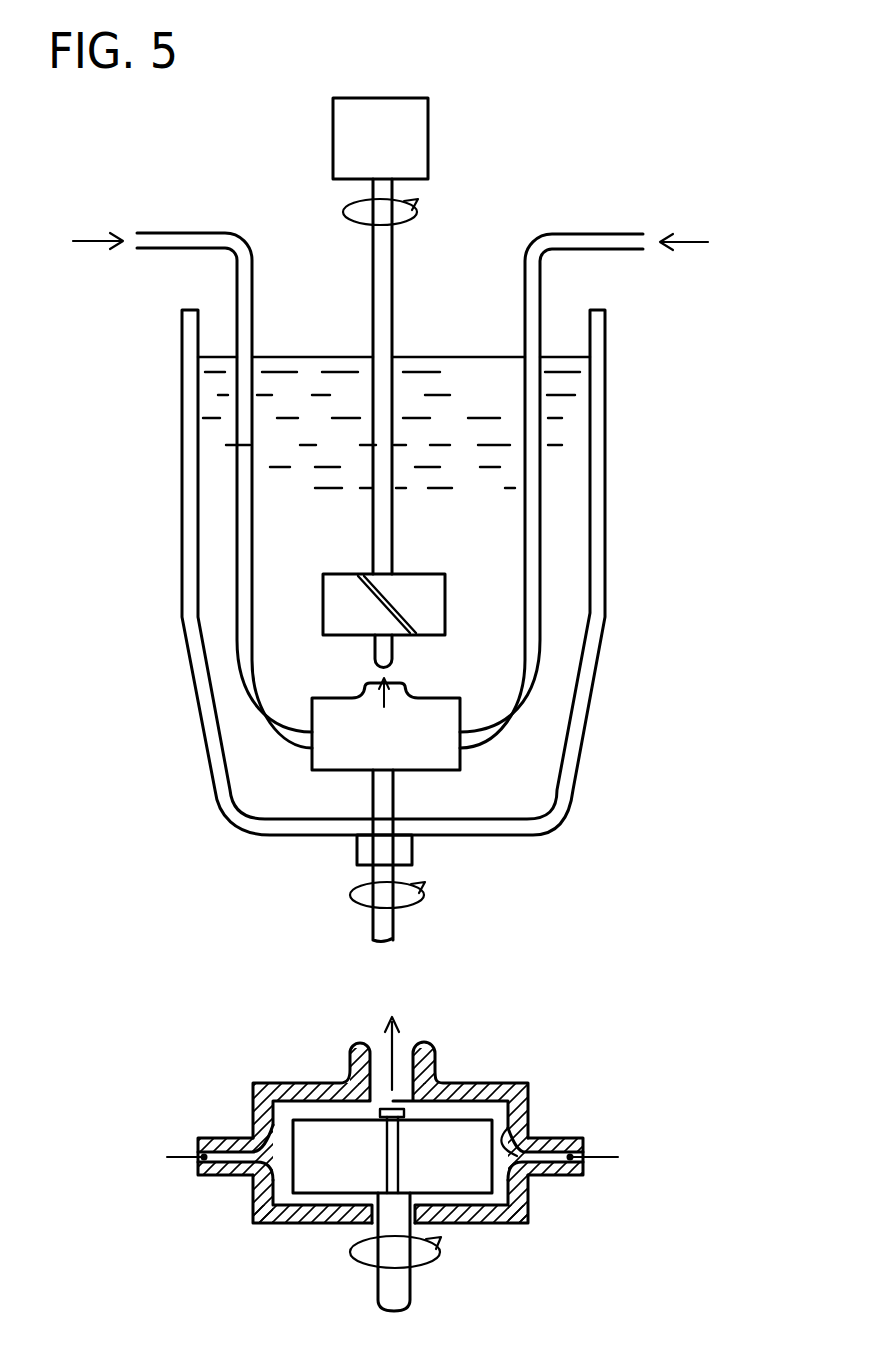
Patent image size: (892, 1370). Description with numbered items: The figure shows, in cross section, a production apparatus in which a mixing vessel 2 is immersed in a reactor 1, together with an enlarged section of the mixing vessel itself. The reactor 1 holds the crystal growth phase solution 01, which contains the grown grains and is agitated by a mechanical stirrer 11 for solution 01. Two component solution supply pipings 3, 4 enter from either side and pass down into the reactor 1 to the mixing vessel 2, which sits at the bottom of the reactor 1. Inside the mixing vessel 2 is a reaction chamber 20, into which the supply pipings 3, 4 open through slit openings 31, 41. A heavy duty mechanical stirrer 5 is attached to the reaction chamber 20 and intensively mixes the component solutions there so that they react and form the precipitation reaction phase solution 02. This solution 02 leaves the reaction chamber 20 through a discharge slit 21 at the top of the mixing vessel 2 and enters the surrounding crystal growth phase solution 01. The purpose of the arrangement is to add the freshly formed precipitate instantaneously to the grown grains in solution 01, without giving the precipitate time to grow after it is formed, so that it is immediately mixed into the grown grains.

The reactor 1 is at (605, 430).
The crystal growth phase solution 01 is at (573, 550).
The mechanical stirrer for solution 01 11 is at (392, 527).
The mixing vessel 2 is at (437, 697).
The precipitation reaction phase solution 02 is at (391, 884).
The component solution supply piping 3 is at (200, 233).
The component solution supply piping 4 is at (580, 234).
The slit opening for supply piping 3 31 is at (265, 1158).
The slit opening for supply piping 4 41 is at (515, 1122).
The reaction chamber 20 is at (487, 1103).
The discharge slit 21 is at (453, 1082).
The heavy duty mechanical stirrer 5 is at (330, 1183).